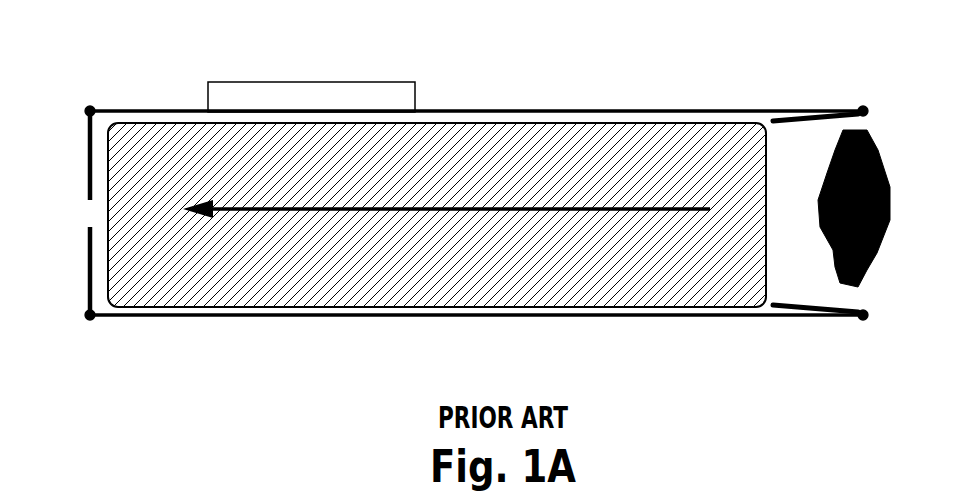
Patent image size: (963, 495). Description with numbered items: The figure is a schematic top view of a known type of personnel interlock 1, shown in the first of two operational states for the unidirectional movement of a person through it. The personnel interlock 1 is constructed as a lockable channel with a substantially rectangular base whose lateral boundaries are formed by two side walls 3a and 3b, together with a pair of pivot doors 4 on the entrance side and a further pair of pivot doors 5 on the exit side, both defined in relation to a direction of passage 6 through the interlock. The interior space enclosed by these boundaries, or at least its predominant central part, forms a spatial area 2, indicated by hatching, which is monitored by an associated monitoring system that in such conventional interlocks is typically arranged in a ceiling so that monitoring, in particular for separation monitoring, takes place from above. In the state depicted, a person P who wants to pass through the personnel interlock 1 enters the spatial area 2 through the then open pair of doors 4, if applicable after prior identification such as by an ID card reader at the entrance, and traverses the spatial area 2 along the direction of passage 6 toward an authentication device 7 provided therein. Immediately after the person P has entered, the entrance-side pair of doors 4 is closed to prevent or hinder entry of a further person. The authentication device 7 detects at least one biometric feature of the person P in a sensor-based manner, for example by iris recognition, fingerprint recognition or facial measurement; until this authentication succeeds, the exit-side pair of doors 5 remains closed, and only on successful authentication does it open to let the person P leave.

The personnel interlock 1 is at (480, 193).
The spatial area 2 is at (605, 122).
The side wall 3a is at (516, 110).
The side wall 3b is at (515, 318).
The pair of pivot doors 4 is at (782, 125).
The pair of pivot doors 5 is at (88, 168).
The direction of passage 6 is at (428, 212).
The authentication device 7 is at (305, 82).
The person P is at (890, 197).